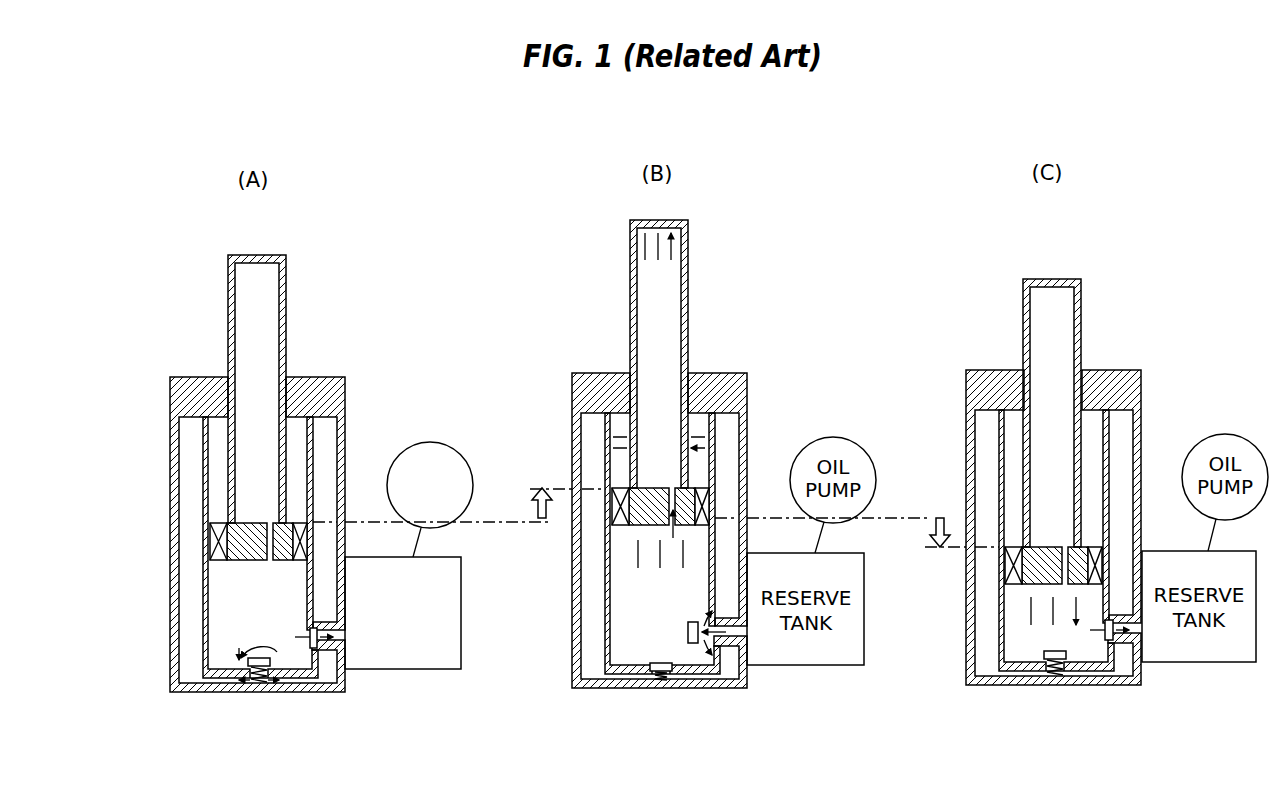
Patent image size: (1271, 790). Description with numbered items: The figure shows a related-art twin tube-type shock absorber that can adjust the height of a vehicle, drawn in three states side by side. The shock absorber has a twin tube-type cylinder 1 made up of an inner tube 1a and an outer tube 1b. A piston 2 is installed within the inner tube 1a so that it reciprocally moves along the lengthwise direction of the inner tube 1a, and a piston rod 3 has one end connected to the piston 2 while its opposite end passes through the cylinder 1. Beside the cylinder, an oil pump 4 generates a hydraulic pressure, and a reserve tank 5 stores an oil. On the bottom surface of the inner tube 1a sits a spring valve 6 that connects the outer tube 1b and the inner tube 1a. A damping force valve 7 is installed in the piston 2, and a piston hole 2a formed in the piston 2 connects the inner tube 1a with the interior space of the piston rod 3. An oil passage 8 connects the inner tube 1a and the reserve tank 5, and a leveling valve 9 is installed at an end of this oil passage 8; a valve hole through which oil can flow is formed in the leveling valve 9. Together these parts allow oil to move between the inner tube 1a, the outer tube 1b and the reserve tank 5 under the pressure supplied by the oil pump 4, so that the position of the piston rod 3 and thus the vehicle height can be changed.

The twin tube-type cylinder 1 is at (202, 534).
The inner tube 1a is at (203, 441).
The outer tube 1b is at (177, 497).
The piston 2 is at (204, 575).
The piston hole 2a is at (268, 562).
The piston rod 3 is at (229, 291).
The oil pump 4 is at (428, 445).
The reserve tank 5 is at (451, 657).
The spring valve 6 is at (249, 657).
The damping force valve 7 is at (213, 540).
The oil passage 8 is at (348, 693).
The leveling valve 9 is at (310, 645).